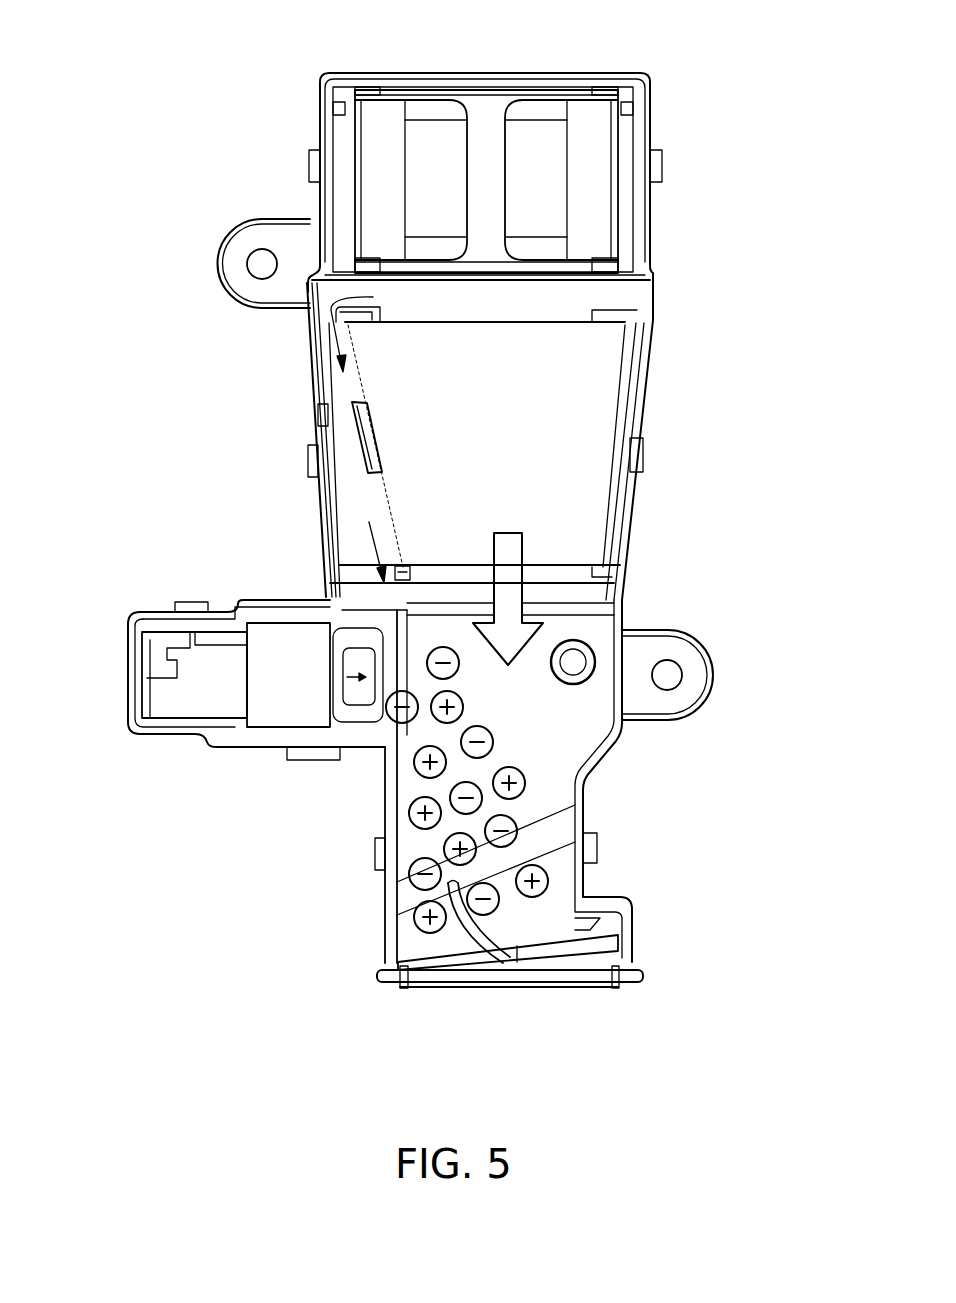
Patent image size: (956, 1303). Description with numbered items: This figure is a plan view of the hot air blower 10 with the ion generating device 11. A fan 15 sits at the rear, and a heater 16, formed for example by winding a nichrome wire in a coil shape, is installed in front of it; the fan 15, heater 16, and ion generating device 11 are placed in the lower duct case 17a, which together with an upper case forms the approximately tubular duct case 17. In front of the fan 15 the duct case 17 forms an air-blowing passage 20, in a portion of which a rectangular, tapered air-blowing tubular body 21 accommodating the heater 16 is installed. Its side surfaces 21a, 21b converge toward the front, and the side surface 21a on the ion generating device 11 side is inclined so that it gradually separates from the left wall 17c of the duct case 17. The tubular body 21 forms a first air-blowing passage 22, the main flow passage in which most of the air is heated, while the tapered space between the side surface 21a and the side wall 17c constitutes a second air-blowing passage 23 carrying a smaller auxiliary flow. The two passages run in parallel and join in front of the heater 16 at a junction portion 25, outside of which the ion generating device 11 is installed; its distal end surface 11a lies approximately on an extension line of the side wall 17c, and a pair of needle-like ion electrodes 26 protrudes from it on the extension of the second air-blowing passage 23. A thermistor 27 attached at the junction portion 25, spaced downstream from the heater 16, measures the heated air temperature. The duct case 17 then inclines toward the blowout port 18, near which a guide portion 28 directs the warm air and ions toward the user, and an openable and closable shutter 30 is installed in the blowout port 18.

The hot air blower 10 is at (215, 233).
The ion generating device 11 is at (185, 703).
The distal end surface 11a is at (342, 690).
The fan 15 is at (486, 84).
The heater 16 is at (601, 380).
The duct case 17 is at (480, 635).
The lower duct case 17a is at (620, 604).
The left wall 17c is at (322, 511).
The blowout port 18 is at (573, 968).
The air-blowing passage 20 is at (323, 433).
The air-blowing tubular body 21 is at (572, 502).
The side surface 21a is at (380, 470).
The side surface 21b is at (612, 456).
The first air-blowing passage 22 is at (440, 566).
The second air-blowing passage 23 is at (346, 533).
The junction portion 25 is at (540, 695).
The ion electrodes 26 is at (358, 680).
The thermistor 27 is at (594, 665).
The guide portion 28 is at (465, 948).
The shutter 30 is at (503, 990).